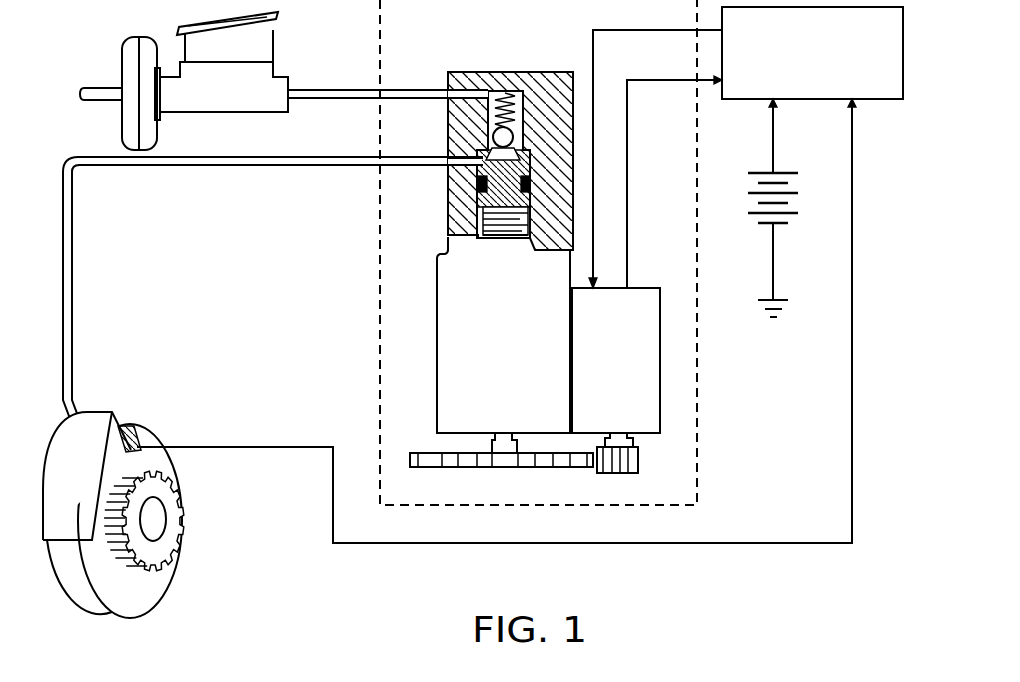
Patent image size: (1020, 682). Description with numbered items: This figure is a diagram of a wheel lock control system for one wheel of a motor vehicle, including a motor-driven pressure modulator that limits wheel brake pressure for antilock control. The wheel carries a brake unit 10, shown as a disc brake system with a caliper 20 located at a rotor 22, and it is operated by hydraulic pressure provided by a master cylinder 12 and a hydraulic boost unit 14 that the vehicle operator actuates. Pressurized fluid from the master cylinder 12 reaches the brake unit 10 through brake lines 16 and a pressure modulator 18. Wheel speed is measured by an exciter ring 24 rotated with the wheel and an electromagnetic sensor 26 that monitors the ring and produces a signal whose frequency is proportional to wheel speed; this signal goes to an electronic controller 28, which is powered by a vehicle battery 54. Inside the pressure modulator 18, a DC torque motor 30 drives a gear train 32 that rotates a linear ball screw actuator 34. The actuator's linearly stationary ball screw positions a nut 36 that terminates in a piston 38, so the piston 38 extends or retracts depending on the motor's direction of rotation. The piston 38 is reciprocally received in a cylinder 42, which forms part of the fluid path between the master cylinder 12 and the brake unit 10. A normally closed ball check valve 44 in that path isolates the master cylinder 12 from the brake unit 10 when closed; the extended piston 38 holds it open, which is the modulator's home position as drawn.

The brake unit 10 is at (168, 440).
The master cylinder 12 is at (257, 90).
The hydraulic boost unit 14 is at (127, 77).
The brake lines 16 is at (368, 95).
The pressure modulator 18 is at (379, 295).
The caliper 20 is at (102, 457).
The rotor 22 is at (137, 590).
The exciter ring 24 is at (172, 517).
The electromagnetic sensor 26 is at (137, 428).
The electronic controller 28 is at (885, 80).
The DC torque motor 30 is at (643, 313).
The gear train 32 is at (437, 460).
The linear ball screw actuator 34 is at (458, 368).
The nut 36 is at (518, 225).
The piston 38 is at (483, 202).
The cylinder 42 is at (493, 147).
The ball check valve 44 is at (497, 138).
The vehicle battery 54 is at (787, 173).